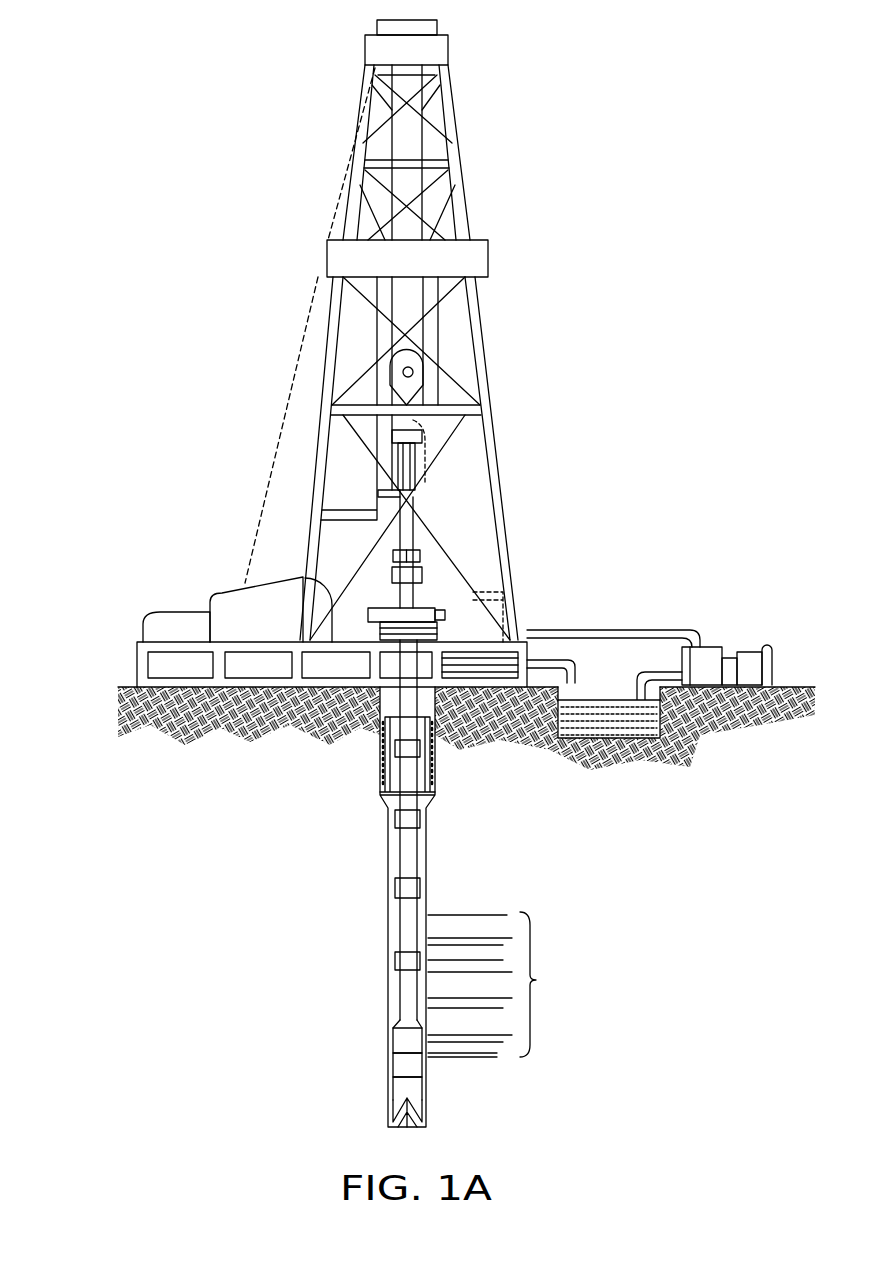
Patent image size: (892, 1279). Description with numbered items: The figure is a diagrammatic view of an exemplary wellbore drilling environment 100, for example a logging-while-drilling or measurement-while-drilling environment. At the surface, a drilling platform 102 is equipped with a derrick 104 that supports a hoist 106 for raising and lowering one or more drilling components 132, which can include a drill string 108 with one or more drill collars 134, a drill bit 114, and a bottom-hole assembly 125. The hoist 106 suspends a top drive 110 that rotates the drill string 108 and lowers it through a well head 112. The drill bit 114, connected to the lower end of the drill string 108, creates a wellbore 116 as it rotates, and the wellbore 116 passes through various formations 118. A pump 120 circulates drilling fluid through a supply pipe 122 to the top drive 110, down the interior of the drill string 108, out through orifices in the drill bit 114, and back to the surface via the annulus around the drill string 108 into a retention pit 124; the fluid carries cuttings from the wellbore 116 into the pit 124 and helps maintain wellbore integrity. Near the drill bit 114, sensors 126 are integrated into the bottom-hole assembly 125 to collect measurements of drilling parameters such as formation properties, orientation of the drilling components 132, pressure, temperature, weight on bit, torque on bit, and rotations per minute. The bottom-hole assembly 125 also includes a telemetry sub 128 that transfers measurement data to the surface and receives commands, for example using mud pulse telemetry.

The wellbore drilling environment 100 is at (292, 72).
The drilling platform 102 is at (137, 660).
The derrick 104 is at (463, 197).
The hoist 106 is at (433, 377).
The drill string 108 is at (417, 853).
The top drive 110 is at (413, 455).
The well head 112 is at (430, 607).
The drill bit 114 is at (423, 1112).
The wellbore 116 is at (427, 881).
The formations 118 is at (497, 984).
The pump 120 is at (710, 655).
The supply pipe 122 is at (603, 628).
The retention pit 124 is at (603, 730).
The bottom-hole assembly 125 is at (322, 1015).
The sensors 126 is at (398, 1065).
The telemetry sub 128 is at (398, 1037).
The drilling components 132 is at (422, 555).
The drill collars 134 is at (407, 1073).